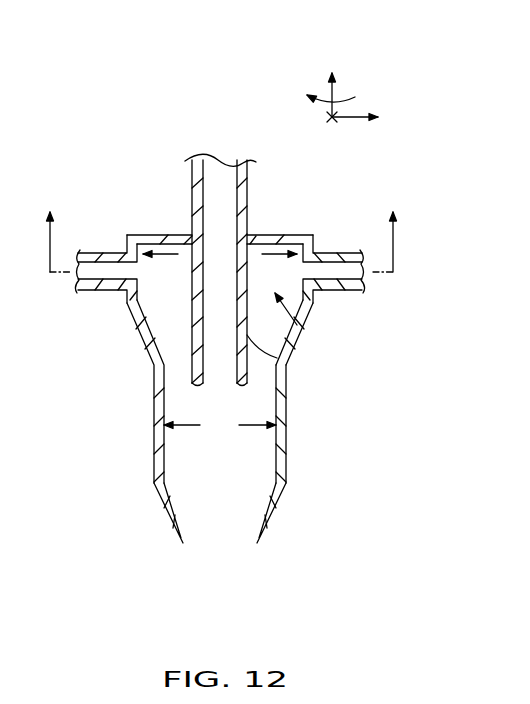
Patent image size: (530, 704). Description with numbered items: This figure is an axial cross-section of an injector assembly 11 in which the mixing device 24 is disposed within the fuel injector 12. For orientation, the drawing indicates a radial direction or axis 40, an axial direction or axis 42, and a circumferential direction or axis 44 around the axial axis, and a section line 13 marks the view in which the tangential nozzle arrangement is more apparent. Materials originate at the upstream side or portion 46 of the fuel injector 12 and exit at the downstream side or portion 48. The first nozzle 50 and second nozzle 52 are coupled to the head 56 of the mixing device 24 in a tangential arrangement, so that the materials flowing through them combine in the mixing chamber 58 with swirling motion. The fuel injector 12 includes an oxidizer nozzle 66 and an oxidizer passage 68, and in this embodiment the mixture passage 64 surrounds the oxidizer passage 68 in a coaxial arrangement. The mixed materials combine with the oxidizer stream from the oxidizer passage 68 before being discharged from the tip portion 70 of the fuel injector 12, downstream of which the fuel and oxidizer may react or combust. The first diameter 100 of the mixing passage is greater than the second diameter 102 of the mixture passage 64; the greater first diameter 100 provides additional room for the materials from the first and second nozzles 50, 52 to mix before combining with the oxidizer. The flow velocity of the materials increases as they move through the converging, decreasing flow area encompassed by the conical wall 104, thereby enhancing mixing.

The injector assembly 11 is at (147, 87).
The fuel injector 12 is at (222, 128).
The section line 13 is at (217, 237).
The mixing device 24 is at (145, 365).
The radial direction or axis 40 is at (350, 120).
The axial direction or axis 42 is at (337, 92).
The circumferential direction or axis 44 is at (357, 98).
The upstream side or portion 46 is at (100, 153).
The downstream side or portion 48 is at (157, 543).
The first nozzle 50 is at (110, 256).
The second nozzle 52 is at (330, 256).
The head 56 is at (170, 238).
The mixing chamber 58 is at (303, 322).
The mixture passage 64 is at (286, 440).
The oxidizer nozzle 66 is at (248, 203).
The oxidizer passage 68 is at (286, 360).
The tip portion 70 is at (222, 552).
The first diameter 100 is at (165, 258).
The second diameter 102 is at (220, 425).
The conical wall 104 is at (298, 345).